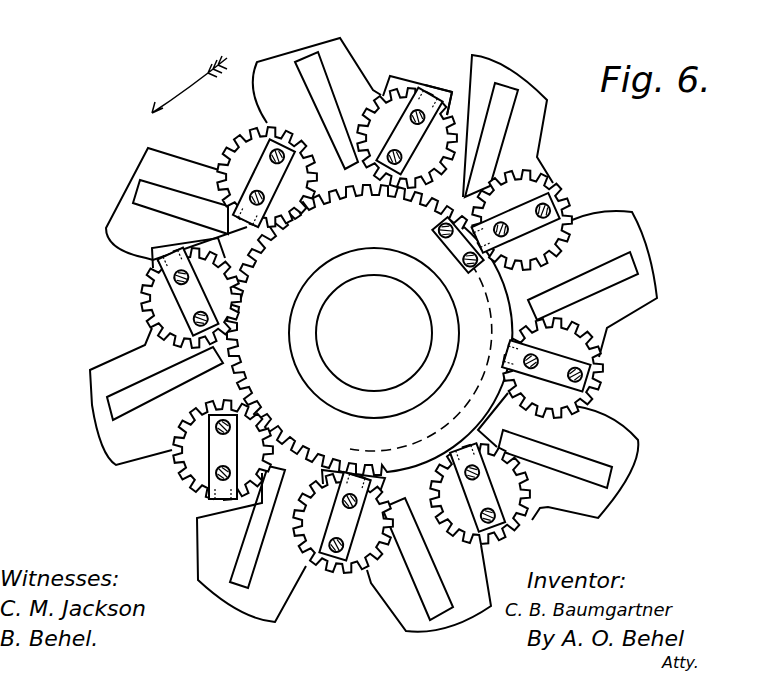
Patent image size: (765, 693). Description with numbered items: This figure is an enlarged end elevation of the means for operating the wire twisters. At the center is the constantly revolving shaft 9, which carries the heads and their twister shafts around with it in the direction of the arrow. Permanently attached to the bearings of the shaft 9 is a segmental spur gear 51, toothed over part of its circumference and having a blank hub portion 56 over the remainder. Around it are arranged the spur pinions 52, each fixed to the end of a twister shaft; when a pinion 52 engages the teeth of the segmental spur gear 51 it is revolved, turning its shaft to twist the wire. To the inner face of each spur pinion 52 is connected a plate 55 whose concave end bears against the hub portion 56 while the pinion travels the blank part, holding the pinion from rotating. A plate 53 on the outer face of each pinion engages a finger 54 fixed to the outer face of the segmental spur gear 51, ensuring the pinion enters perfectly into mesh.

The shaft 9 is at (374, 333).
The segmental spur gear 51 is at (369, 330).
The spur pinion 52 is at (402, 92).
The plate 53 is at (409, 131).
The finger 54 is at (452, 241).
The plate 55 is at (435, 88).
The hub portion 56 is at (421, 345).